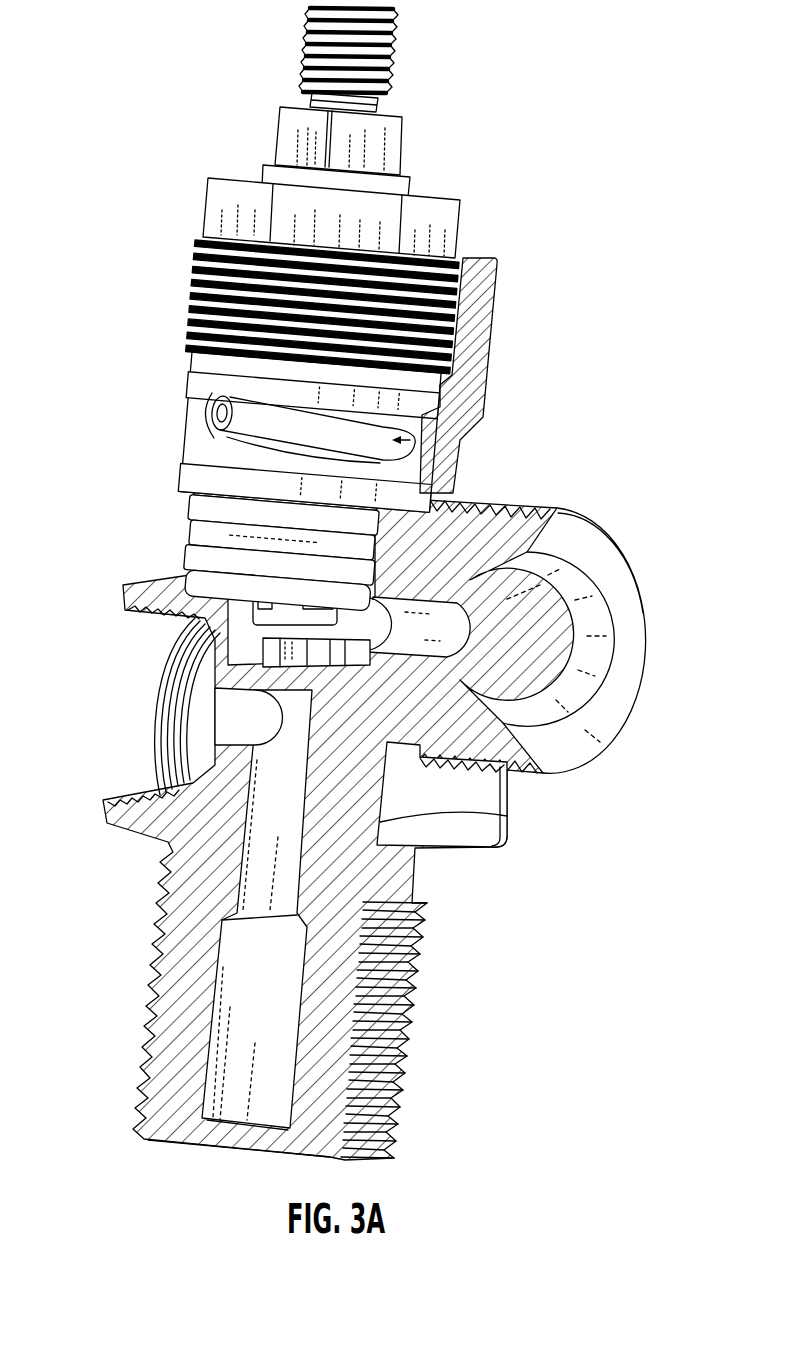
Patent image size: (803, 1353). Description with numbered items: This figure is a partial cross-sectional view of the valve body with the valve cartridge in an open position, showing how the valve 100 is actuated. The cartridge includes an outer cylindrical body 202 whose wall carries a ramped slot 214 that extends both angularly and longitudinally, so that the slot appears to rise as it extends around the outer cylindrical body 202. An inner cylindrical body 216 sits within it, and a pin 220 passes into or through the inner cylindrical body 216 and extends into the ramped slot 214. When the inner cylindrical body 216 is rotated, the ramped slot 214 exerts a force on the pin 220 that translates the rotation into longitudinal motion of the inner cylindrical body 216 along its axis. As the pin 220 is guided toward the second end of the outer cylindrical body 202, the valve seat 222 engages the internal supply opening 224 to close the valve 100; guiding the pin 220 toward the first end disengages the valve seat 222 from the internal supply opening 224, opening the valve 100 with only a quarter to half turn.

The valve 100 is at (530, 38).
The outer cylindrical body 202 is at (152, 274).
The ramped slot 214 is at (457, 452).
The inner cylindrical body 216 is at (244, 84).
The pin 220 is at (222, 414).
The valve seat 222 is at (180, 657).
The internal supply opening 224 is at (177, 733).